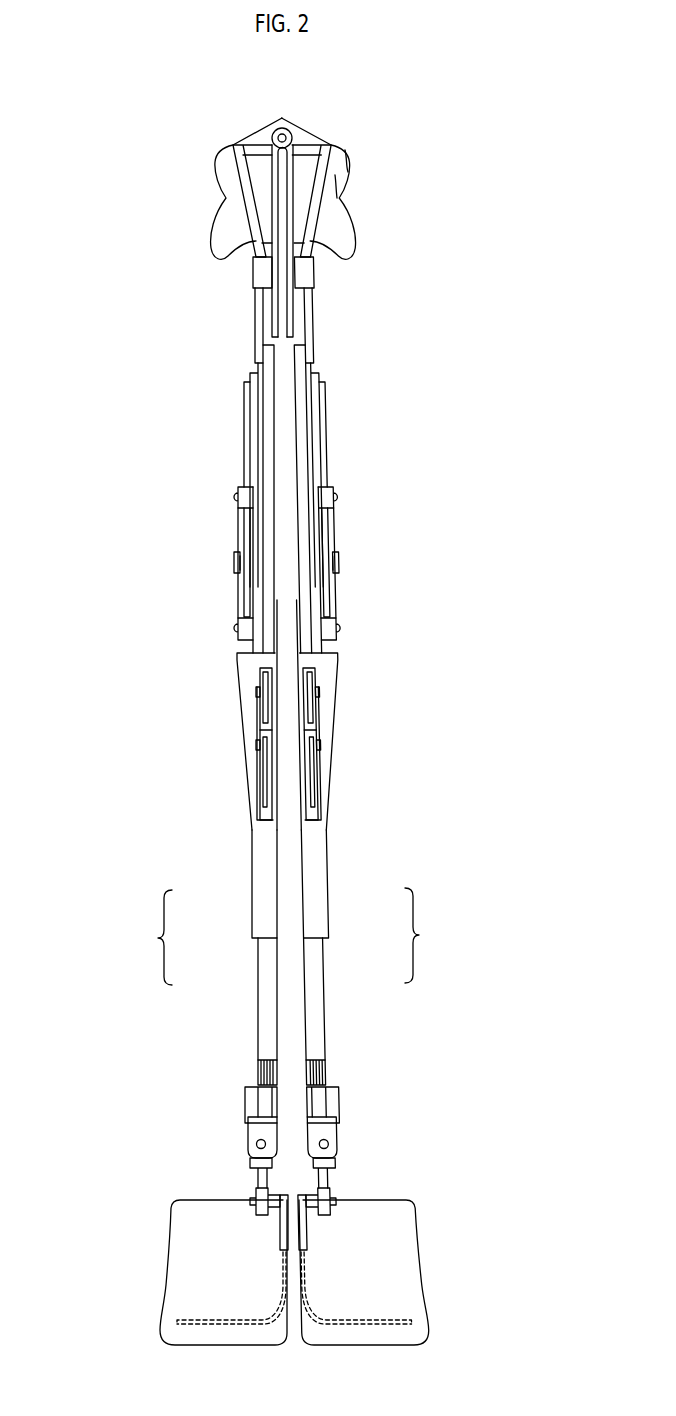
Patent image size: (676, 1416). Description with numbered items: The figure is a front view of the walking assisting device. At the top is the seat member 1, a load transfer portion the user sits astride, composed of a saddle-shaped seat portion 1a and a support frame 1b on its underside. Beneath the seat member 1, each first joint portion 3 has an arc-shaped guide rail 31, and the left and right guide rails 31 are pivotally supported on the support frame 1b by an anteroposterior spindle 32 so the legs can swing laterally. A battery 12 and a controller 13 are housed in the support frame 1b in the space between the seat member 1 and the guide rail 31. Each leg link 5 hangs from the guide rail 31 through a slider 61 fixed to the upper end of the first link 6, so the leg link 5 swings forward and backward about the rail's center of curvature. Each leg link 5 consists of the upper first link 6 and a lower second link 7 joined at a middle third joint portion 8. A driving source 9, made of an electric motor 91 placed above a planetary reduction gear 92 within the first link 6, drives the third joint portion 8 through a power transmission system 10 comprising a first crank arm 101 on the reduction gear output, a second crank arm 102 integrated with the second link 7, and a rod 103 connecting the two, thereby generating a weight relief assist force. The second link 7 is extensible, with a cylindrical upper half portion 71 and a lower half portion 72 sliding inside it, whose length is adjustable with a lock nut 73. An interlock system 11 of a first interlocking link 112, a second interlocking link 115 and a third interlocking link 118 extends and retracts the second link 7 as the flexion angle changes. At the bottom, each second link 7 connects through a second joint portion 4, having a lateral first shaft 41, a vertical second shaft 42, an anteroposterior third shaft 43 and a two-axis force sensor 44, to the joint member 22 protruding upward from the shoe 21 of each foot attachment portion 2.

The seat member 1 is at (200, 150).
The seat portion 1a is at (353, 172).
The support frame 1b is at (330, 183).
The first joint portion 3 is at (262, 140).
The anteroposterior spindle 32 is at (282, 128).
The controller 13 is at (255, 175).
The guide rail 31 is at (292, 202).
The battery 12 is at (305, 273).
The slider 61 is at (255, 332).
The first link 6 is at (268, 397).
The leg link 5 is at (183, 418).
The electric motor 91 is at (262, 447).
The driving source 9 is at (225, 482).
The first crank arm 101 is at (233, 498).
The power transmission system 10 is at (217, 525).
The reduction gear 92 is at (236, 562).
The rod 103 is at (236, 573).
The second crank arm 102 is at (235, 643).
The third joint portion 8 is at (238, 662).
The third interlocking link 118 is at (258, 703).
The interlock system 11 is at (248, 712).
The first interlocking link 112 is at (260, 731).
The second interlocking link 115 is at (256, 771).
The upper half portion 71 is at (265, 909).
The lower half portion 72 is at (265, 970).
The second link 7 is at (290, 936).
The lock nut 73 is at (257, 1067).
The force sensor 44 is at (245, 1095).
The second joint portion 4 is at (237, 1130).
The third shaft 43 is at (257, 1142).
The second shaft 42 is at (258, 1177).
The first shaft 41 is at (257, 1203).
The joint member 22 is at (280, 1237).
The shoe 21 is at (168, 1277).
The foot attachment portion 2 is at (148, 1308).